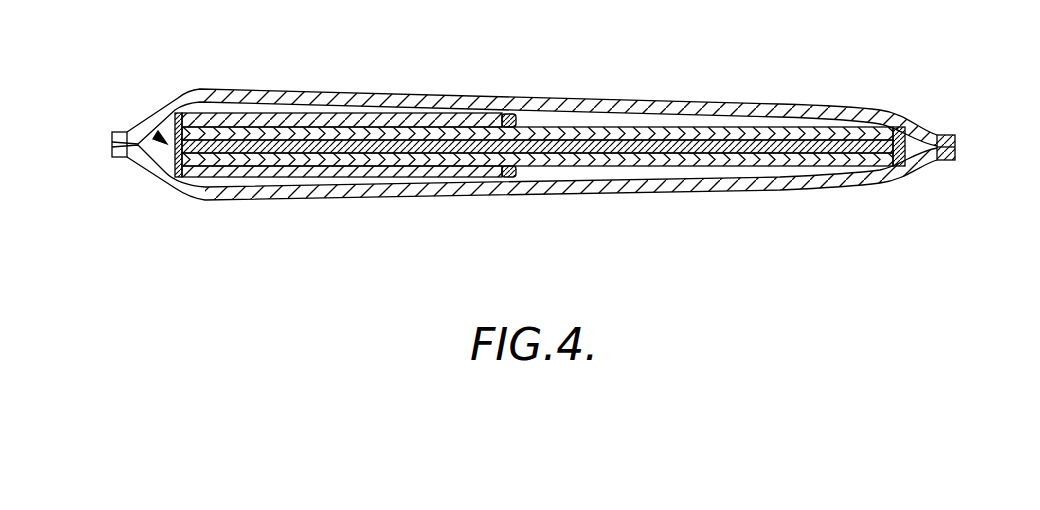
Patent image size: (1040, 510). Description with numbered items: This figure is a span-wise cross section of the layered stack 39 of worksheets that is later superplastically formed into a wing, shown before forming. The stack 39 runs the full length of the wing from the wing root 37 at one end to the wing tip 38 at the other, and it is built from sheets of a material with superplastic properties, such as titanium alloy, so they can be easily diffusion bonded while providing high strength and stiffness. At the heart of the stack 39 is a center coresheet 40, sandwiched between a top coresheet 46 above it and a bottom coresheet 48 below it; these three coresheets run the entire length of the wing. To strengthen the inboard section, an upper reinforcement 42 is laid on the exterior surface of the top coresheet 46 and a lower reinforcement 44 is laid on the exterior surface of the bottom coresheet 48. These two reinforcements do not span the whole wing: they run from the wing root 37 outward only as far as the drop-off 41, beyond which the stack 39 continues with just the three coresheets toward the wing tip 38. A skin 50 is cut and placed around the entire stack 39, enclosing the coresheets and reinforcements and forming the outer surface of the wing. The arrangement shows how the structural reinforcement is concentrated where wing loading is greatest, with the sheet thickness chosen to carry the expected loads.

The wing root 37 is at (112, 143).
The wing tip 38 is at (955, 147).
The stack 39 is at (156, 135).
The center coresheet 40 is at (578, 146).
The drop-off 41 is at (523, 117).
The upper reinforcement 42 is at (245, 125).
The lower reinforcement 44 is at (322, 170).
The top coresheet 46 is at (660, 133).
The bottom coresheet 48 is at (580, 160).
The skin 50 is at (878, 112).